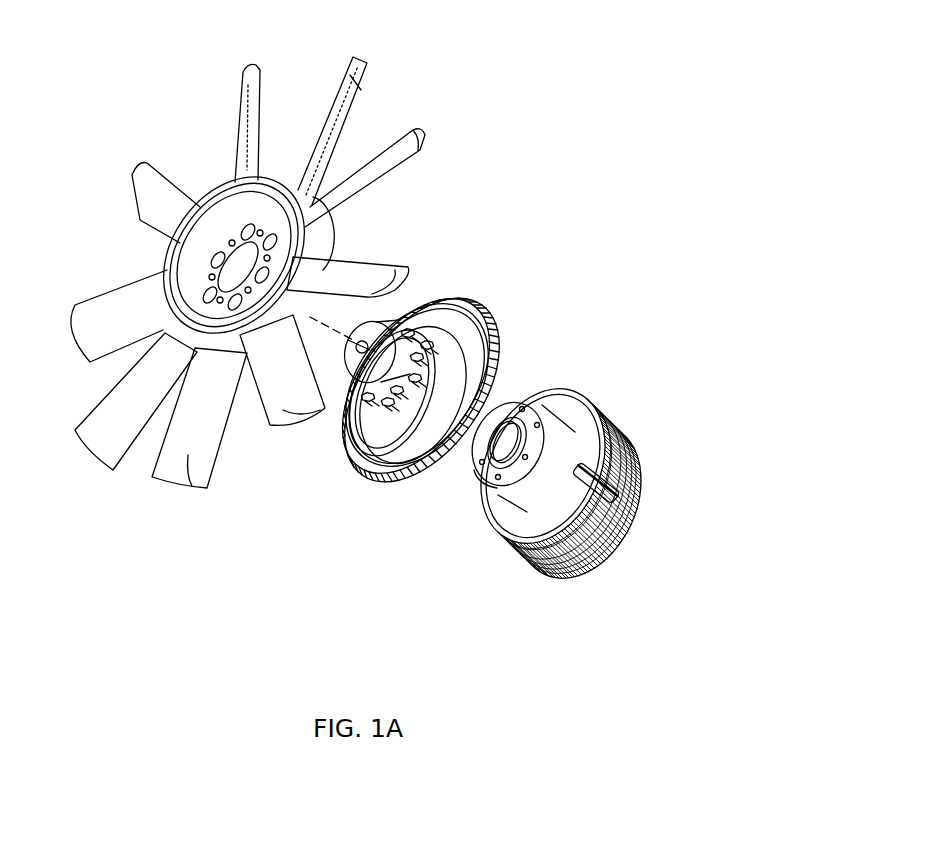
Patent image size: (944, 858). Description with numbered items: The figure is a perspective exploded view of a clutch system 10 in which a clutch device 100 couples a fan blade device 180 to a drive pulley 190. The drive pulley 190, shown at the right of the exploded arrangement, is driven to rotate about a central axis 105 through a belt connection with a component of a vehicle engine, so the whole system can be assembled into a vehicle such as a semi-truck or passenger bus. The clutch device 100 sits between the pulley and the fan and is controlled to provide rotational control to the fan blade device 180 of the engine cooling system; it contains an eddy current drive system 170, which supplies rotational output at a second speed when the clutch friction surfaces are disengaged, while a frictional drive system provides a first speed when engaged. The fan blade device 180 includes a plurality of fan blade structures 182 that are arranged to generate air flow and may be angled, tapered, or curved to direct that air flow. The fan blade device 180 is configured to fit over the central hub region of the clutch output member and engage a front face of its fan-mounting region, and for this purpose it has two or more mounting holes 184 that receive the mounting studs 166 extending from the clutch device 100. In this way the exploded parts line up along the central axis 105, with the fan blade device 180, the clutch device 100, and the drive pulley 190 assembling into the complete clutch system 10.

The clutch system 10 is at (578, 52).
The clutch device 100 is at (518, 240).
The central axis 105 is at (522, 452).
The mounting studs 166 is at (407, 330).
The eddy current drive system 170 is at (510, 320).
The fan blade device 180 is at (213, 197).
The fan blade structures 182 is at (240, 92).
The mounting holes 184 is at (205, 277).
The drive pulley 190 is at (500, 530).